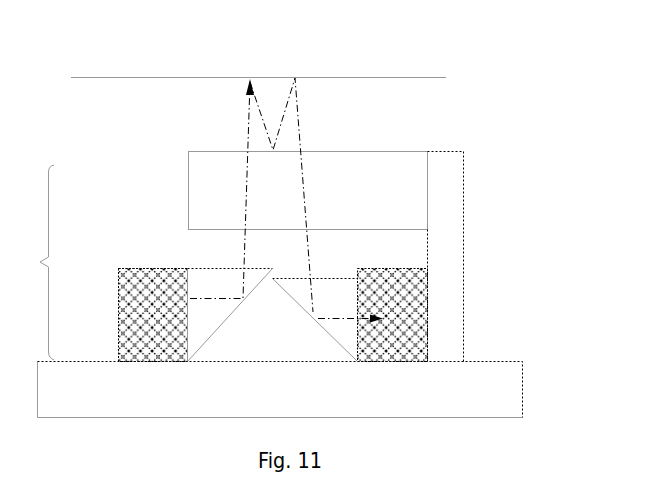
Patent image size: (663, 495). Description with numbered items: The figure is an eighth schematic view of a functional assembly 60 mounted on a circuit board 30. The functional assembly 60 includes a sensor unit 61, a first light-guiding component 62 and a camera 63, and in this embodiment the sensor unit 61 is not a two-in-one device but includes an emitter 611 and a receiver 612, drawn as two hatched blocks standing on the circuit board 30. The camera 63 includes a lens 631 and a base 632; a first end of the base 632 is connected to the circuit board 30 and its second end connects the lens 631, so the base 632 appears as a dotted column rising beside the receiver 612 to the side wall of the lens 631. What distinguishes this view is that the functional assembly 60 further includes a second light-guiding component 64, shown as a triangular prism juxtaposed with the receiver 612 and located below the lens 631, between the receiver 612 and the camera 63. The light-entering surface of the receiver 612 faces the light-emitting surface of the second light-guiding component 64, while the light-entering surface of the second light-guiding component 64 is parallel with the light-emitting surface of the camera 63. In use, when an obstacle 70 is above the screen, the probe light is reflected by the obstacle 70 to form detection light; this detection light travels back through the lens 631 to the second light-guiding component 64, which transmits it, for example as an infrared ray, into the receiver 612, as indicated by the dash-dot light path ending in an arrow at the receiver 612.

The obstacle 70 is at (424, 78).
The camera 63 is at (331, 165).
The lens 631 is at (368, 165).
The base 632 is at (453, 222).
The functional assembly 60 is at (32, 262).
The sensor unit 61 is at (118, 295).
The emitter 611 is at (132, 268).
The receiver 612 is at (383, 272).
The first light-guiding component 62 is at (207, 280).
The second light-guiding component 64 is at (292, 275).
The circuit board 30 is at (503, 400).